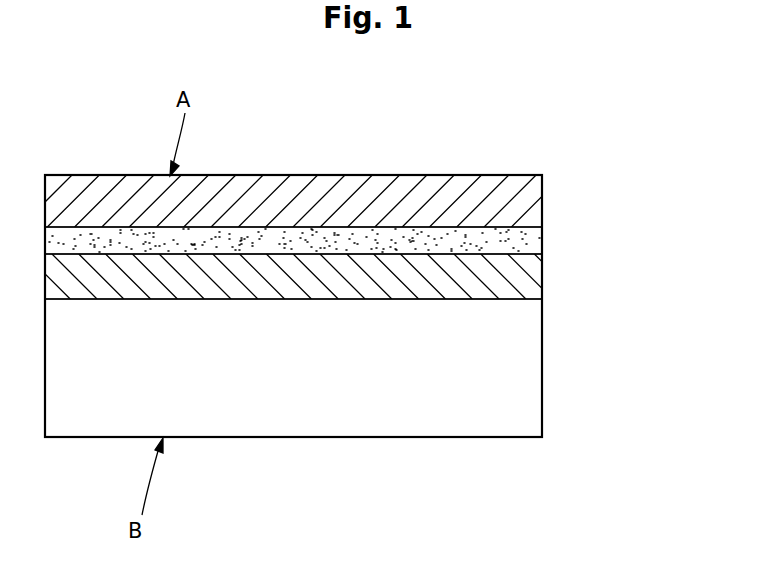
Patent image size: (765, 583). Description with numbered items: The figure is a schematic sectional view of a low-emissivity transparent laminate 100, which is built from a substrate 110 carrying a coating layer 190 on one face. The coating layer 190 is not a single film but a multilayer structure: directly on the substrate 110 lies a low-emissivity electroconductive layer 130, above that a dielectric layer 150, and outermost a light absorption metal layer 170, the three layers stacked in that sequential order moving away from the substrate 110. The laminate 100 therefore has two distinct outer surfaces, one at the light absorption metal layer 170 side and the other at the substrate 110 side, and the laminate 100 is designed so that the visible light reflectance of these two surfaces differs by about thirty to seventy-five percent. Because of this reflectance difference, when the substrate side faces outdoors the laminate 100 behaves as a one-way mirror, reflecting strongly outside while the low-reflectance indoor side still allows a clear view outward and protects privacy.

The low-emissivity transparent laminate 100 is at (468, 146).
The substrate 110 is at (522, 353).
The low-emissivity electroconductive layer 130 is at (522, 282).
The dielectric layer 150 is at (522, 243).
The light absorption metal layer 170 is at (522, 204).
The coating layer 190 is at (352, 237).